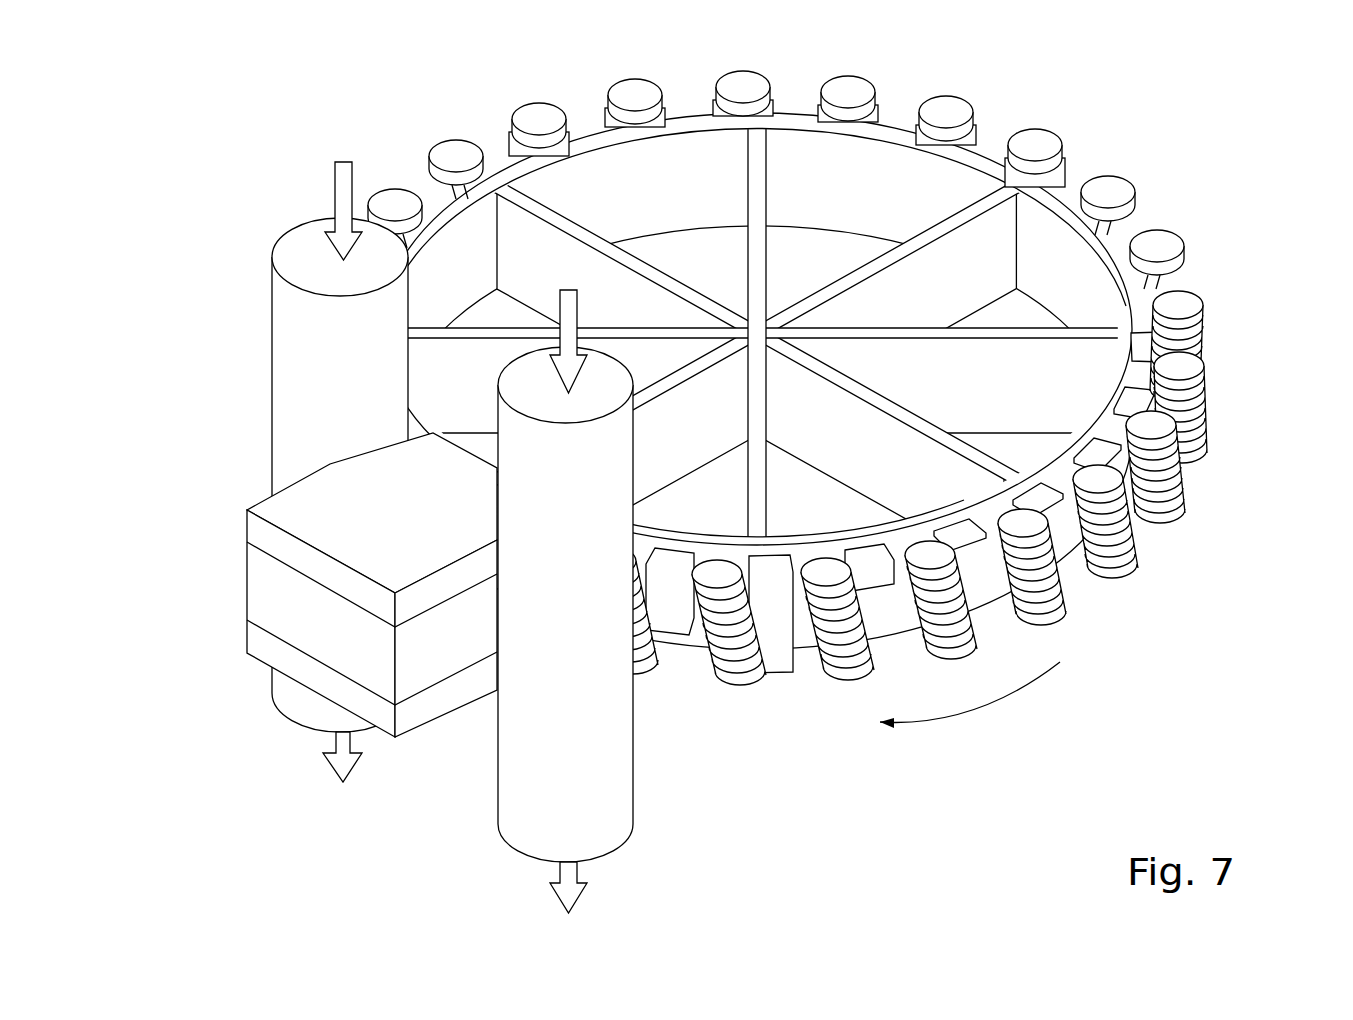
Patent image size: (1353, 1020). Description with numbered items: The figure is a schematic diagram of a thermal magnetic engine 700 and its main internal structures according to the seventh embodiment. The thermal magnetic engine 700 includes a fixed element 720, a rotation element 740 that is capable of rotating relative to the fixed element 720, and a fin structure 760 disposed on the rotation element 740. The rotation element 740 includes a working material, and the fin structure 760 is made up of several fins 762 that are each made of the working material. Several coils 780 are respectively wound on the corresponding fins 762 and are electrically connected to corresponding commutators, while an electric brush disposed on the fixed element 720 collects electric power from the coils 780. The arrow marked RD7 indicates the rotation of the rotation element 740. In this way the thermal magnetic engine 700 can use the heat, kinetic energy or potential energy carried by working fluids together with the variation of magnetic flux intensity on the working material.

The thermal magnetic engine 700 is at (318, 95).
The fixed element 720 is at (272, 593).
The rotation element 740 is at (1137, 343).
The fin structure 760 is at (810, 166).
The fins 762 is at (1253, 103).
The coils 780 is at (1207, 393).
The rotation direction RD7 is at (973, 710).